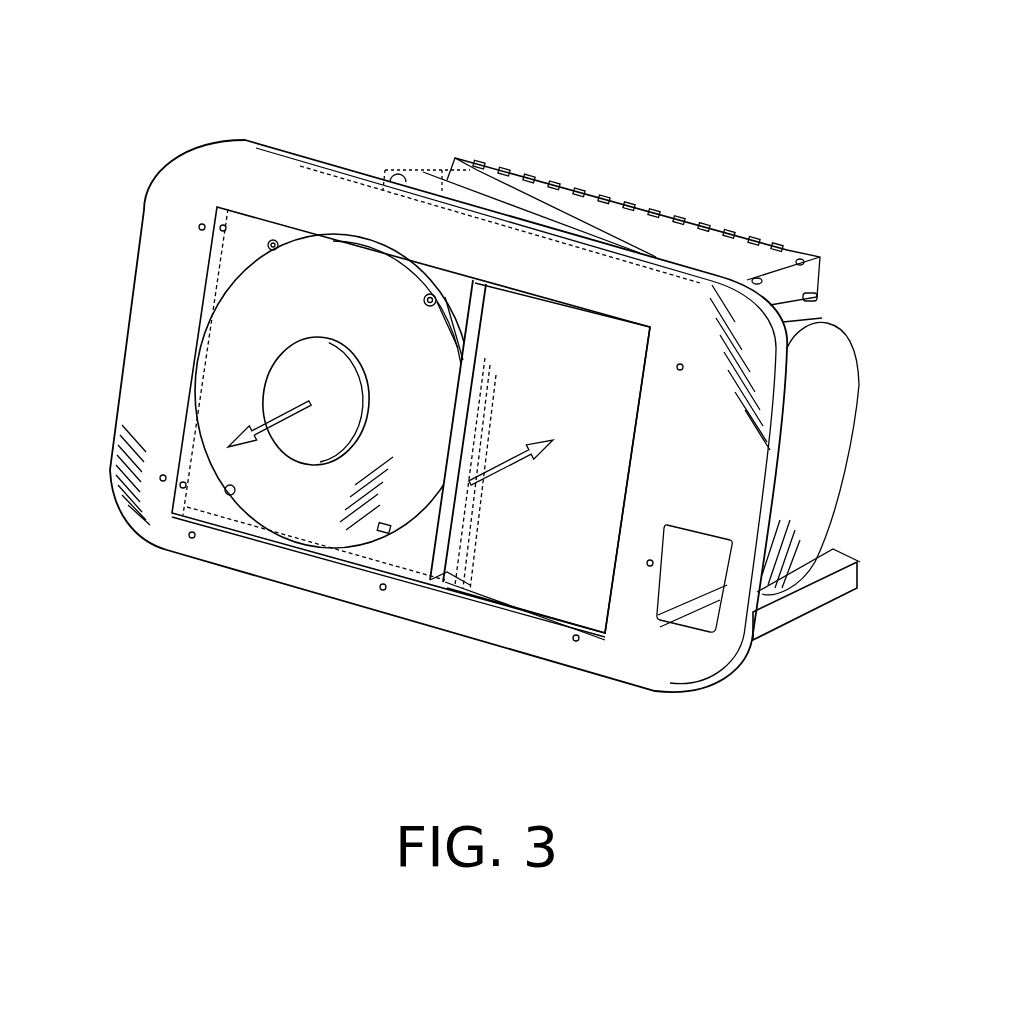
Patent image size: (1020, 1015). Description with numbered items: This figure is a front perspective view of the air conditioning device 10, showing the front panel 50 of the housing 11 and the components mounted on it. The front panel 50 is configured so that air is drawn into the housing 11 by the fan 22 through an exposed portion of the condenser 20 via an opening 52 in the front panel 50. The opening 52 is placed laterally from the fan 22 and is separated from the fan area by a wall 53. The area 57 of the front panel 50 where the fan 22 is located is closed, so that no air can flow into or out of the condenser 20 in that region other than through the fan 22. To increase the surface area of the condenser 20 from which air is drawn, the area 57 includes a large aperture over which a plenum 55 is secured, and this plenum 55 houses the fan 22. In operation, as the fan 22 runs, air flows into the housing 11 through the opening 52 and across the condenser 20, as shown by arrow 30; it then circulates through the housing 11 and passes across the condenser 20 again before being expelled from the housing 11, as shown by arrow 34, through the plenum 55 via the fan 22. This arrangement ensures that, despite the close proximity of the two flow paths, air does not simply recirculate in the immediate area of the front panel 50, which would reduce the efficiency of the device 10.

The air conditioning device 10 is at (428, 124).
The housing 11 is at (800, 620).
The condenser 20 is at (538, 327).
The fan 22 is at (323, 350).
The arrow 30 is at (517, 467).
The arrow 34 is at (280, 410).
The front panel 50 is at (135, 385).
The opening 52 is at (620, 313).
The wall 53 is at (437, 558).
The plenum 55 is at (362, 302).
The area 57 is at (243, 233).